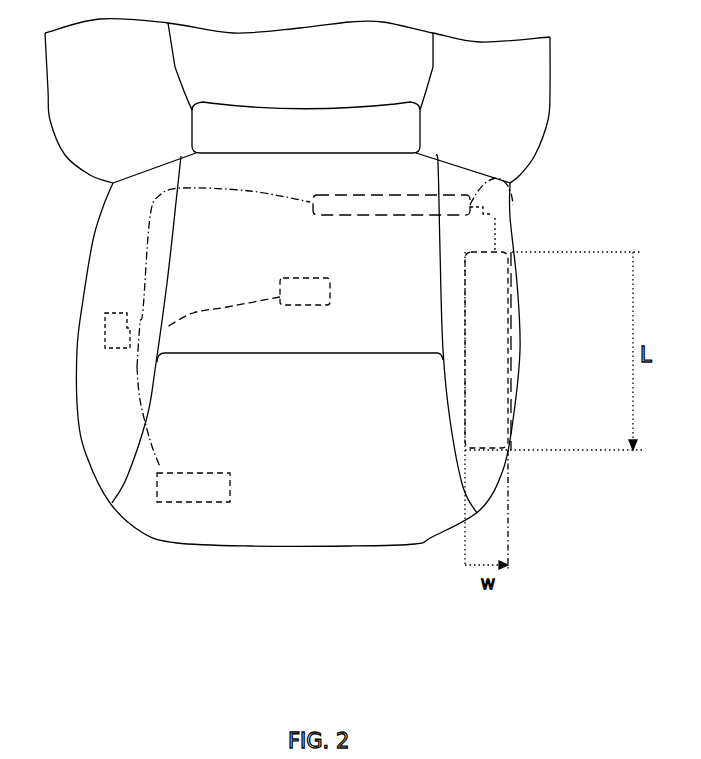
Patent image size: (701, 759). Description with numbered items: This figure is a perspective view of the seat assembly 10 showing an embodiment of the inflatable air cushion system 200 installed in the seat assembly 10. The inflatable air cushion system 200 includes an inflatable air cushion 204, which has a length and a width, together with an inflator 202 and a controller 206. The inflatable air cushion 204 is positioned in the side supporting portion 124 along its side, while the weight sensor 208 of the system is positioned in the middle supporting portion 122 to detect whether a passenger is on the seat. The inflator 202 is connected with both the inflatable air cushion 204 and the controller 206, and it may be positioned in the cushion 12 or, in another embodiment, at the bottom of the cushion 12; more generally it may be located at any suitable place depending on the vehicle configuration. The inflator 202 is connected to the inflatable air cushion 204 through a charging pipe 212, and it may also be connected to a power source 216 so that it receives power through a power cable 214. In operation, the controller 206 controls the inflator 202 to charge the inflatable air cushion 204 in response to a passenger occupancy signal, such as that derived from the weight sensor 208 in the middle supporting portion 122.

The seat assembly 10 is at (555, 80).
The cushion 12 is at (213, 230).
The middle supporting portion 122 is at (413, 268).
The side supporting portion 124 is at (483, 232).
The inflatable air cushion system 200 is at (509, 392).
The inflator 202 is at (508, 178).
The inflatable air cushion 204 is at (512, 349).
The controller 206 is at (200, 502).
The weight sensor 208 is at (330, 297).
The charging pipe 212 is at (485, 209).
The power cable 214 is at (145, 272).
The power source 216 is at (105, 338).